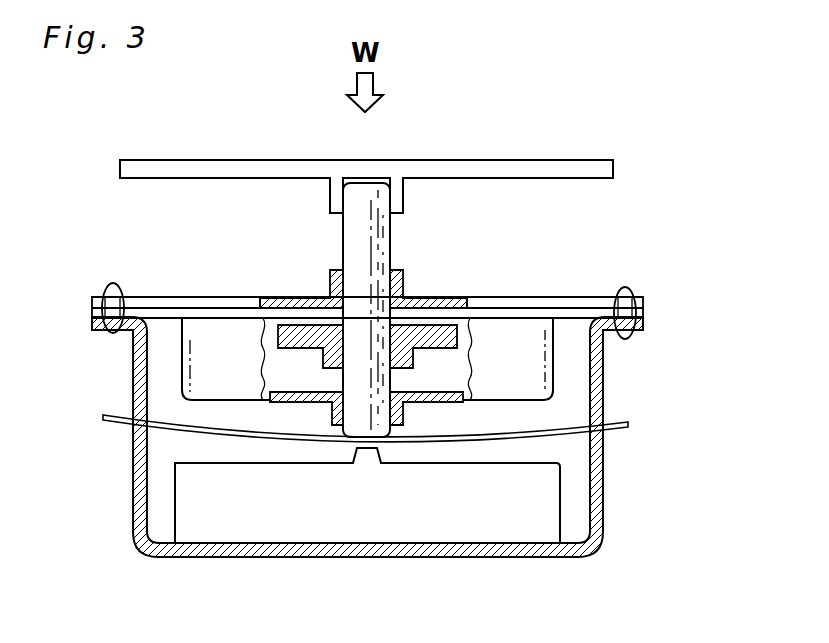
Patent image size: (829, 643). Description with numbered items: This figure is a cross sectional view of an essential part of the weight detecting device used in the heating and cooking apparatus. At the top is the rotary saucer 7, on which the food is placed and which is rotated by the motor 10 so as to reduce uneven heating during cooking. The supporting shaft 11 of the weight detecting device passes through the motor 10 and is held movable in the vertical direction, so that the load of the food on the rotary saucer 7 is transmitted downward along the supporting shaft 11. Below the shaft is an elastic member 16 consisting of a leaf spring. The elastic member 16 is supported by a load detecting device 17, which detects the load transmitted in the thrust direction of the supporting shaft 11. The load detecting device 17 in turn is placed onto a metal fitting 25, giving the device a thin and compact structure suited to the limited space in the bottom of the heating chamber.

The rotary saucer 7 is at (487, 173).
The motor 10 is at (227, 333).
The supporting shaft 11 is at (372, 242).
The elastic member 16 is at (553, 427).
The load detecting device 17 is at (530, 520).
The metal fitting 25 is at (598, 478).